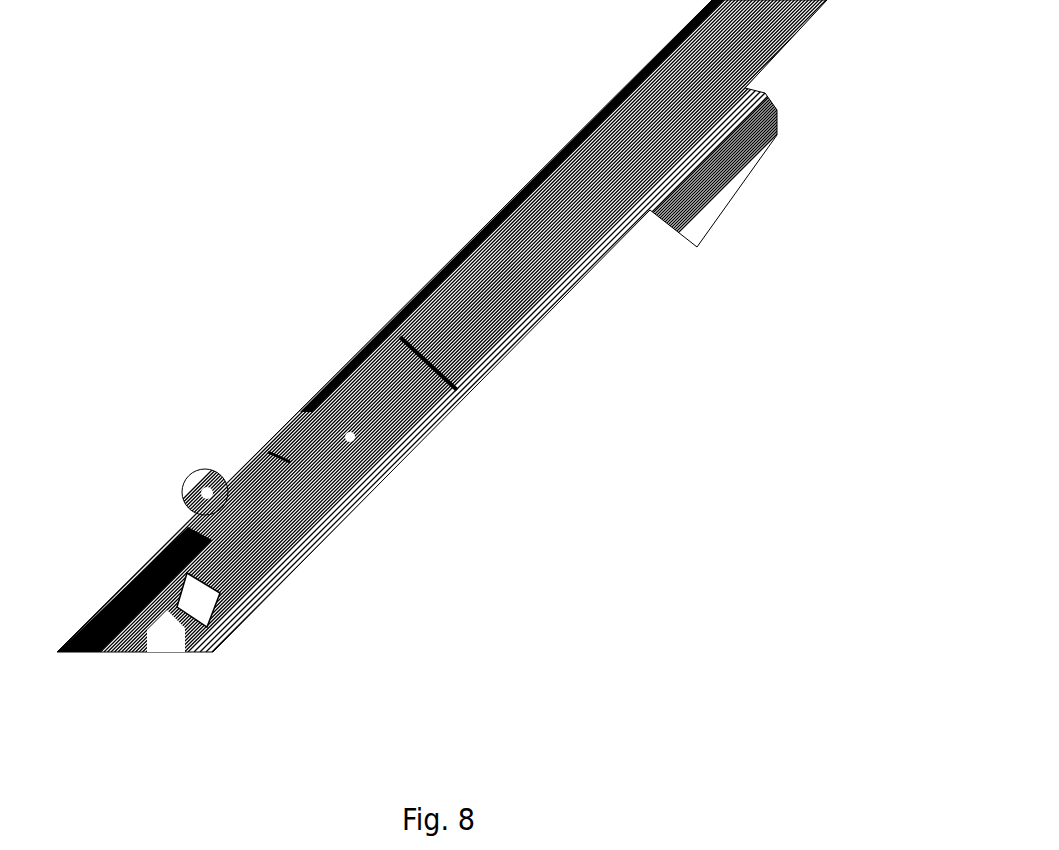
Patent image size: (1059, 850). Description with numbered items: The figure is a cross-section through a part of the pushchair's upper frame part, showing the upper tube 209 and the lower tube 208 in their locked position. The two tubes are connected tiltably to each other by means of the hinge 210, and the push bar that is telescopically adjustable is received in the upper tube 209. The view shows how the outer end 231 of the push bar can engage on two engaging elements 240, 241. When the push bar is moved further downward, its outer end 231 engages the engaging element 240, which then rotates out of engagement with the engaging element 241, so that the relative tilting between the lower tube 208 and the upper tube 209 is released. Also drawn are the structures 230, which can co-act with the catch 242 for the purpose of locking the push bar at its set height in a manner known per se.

The lower tube 208 is at (117, 622).
The upper tube 209 is at (588, 158).
The hinge 210 is at (210, 472).
The structures 230 is at (485, 358).
The outer end 231 is at (347, 398).
The engaging element 240 is at (317, 485).
The engaging element 241 is at (263, 537).
The catch 242 is at (410, 348).